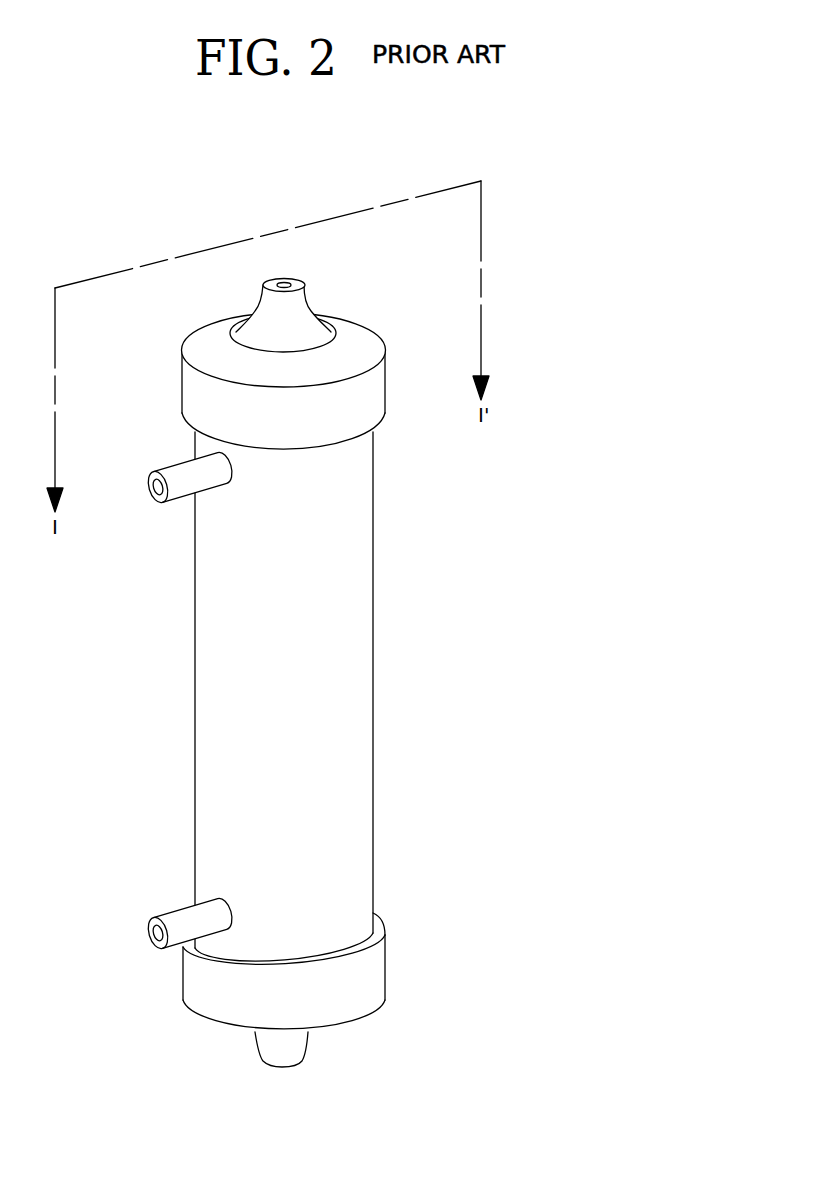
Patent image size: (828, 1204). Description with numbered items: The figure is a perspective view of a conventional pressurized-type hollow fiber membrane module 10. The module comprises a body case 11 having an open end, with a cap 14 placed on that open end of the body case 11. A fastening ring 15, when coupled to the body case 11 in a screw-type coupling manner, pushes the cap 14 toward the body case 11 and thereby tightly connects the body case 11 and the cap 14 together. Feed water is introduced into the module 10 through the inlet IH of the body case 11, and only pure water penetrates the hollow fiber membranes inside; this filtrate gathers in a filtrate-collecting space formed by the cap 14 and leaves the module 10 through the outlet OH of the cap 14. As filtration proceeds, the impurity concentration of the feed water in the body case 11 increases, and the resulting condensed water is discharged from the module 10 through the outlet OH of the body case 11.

The pressurized-type hollow fiber membrane module 10 is at (250, 614).
The body case 11 is at (347, 592).
The cap 14 is at (298, 332).
The fastening ring 15 is at (360, 408).
The outlet OH is at (152, 493).
The inlet IH is at (153, 935).